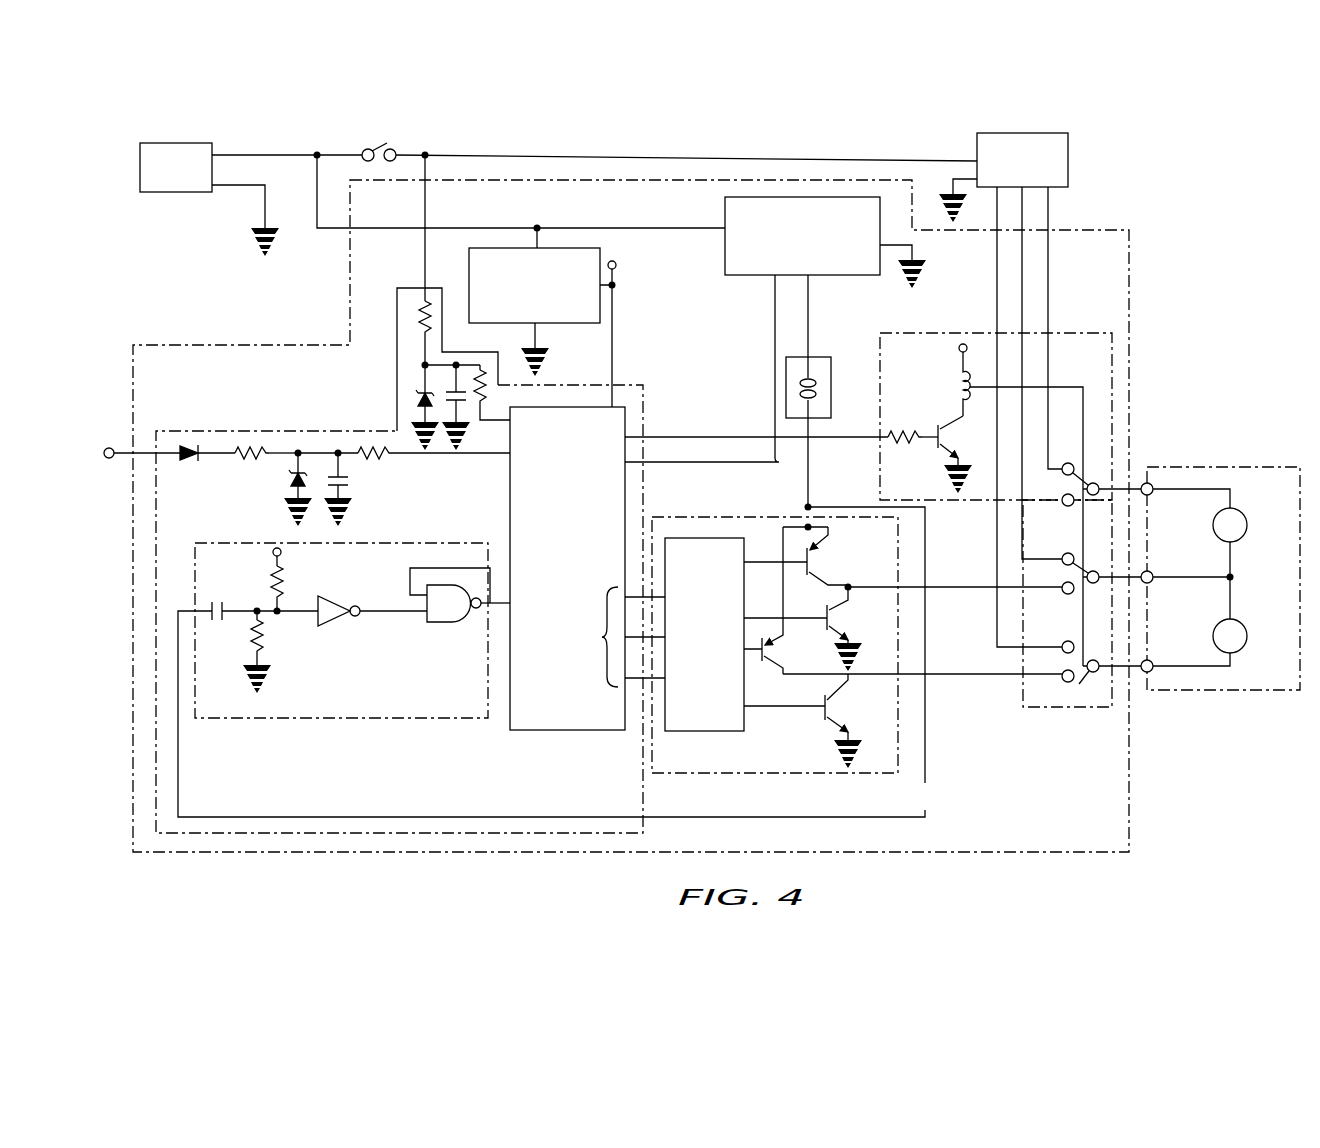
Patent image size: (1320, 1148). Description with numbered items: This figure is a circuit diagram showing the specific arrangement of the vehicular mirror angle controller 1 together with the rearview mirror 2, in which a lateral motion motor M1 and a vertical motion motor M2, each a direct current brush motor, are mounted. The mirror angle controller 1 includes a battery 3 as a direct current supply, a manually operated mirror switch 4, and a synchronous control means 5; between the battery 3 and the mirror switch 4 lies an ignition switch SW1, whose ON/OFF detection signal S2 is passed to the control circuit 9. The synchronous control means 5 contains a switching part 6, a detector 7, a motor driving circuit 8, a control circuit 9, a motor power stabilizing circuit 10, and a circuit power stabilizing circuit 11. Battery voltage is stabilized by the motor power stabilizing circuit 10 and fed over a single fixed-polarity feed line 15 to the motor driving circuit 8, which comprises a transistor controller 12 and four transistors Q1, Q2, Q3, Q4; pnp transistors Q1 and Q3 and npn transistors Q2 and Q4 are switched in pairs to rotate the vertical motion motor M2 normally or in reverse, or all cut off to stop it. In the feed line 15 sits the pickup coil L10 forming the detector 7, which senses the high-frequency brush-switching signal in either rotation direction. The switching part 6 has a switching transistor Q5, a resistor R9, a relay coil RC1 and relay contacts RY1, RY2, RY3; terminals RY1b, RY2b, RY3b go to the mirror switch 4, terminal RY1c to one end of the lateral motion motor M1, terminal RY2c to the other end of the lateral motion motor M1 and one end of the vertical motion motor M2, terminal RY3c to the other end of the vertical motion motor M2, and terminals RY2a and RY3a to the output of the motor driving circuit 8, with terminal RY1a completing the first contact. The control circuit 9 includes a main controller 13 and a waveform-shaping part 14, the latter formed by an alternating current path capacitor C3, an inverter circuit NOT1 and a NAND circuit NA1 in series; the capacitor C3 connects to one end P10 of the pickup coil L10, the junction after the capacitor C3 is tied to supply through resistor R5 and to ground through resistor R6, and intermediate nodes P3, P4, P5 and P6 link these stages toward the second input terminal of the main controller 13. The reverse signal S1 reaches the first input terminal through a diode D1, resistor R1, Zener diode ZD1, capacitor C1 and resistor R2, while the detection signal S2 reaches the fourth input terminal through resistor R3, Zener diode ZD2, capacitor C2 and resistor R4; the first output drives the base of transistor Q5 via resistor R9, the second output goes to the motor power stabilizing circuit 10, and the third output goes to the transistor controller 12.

The mirror angle controller 1 is at (577, 146).
The rearview mirror 2 is at (1225, 467).
The battery 3 is at (182, 142).
The mirror switch 4 is at (1068, 153).
The synchronous control means 5 is at (158, 345).
The switching part 6 is at (1075, 707).
The detector 7 is at (823, 357).
The motor driving circuit 8 is at (722, 775).
The control circuit 9 is at (228, 852).
The motor power stabilizing circuit 10 is at (725, 212).
The circuit power stabilizing circuit 11 is at (552, 248).
The transistor controller 12 is at (745, 720).
The main controller 13 is at (572, 732).
The waveform-shaping part 14 is at (350, 722).
The feed line 15 is at (808, 312).
The ignition switch SW1 is at (376, 142).
The reverse signal S1 is at (118, 443).
The ON/OFF detection signal S2 is at (428, 210).
The diode D1 is at (192, 445).
The resistor R1 is at (255, 445).
The resistor R2 is at (360, 445).
The resistor R3 is at (421, 318).
The resistor R4 is at (475, 370).
The resistor R5 is at (283, 590).
The resistor R6 is at (263, 650).
The resistor R9 is at (913, 451).
The Zener diode ZD1 is at (292, 482).
The Zener diode ZD2 is at (418, 398).
The capacitor C1 is at (347, 478).
The capacitor C2 is at (467, 400).
The alternating current path capacitor C3 is at (262, 624).
The inverter circuit NOT1 is at (333, 627).
The NAND circuit NA1 is at (442, 623).
The node P3 is at (240, 606).
The node P4 is at (395, 613).
The node P5 is at (448, 568).
The node P6 is at (478, 610).
The end of the pickup coil P10 is at (806, 505).
The pickup coil L10 is at (796, 386).
The relay coil RC1 is at (996, 499).
The transistor Q1 is at (796, 556).
The transistor Q2 is at (805, 629).
The transistor Q3 is at (772, 600).
The transistor Q4 is at (805, 721).
The switching transistor Q5 is at (953, 445).
The relay contact RY1 is at (1090, 470).
The terminal RY1a is at (1063, 494).
The terminal RY1b is at (1075, 462).
The terminal RY1c is at (1098, 484).
The relay contact RY2 is at (1090, 570).
The terminal RY2a is at (1051, 602).
The terminal RY2b is at (1051, 548).
The terminal RY2c is at (1094, 584).
The relay contact RY3 is at (1082, 690).
The terminal RY3a is at (1064, 681).
The terminal RY3b is at (1051, 636).
The terminal RY3c is at (1096, 673).
The lateral motion motor M1 is at (1249, 525).
The vertical motion motor M2 is at (1249, 636).